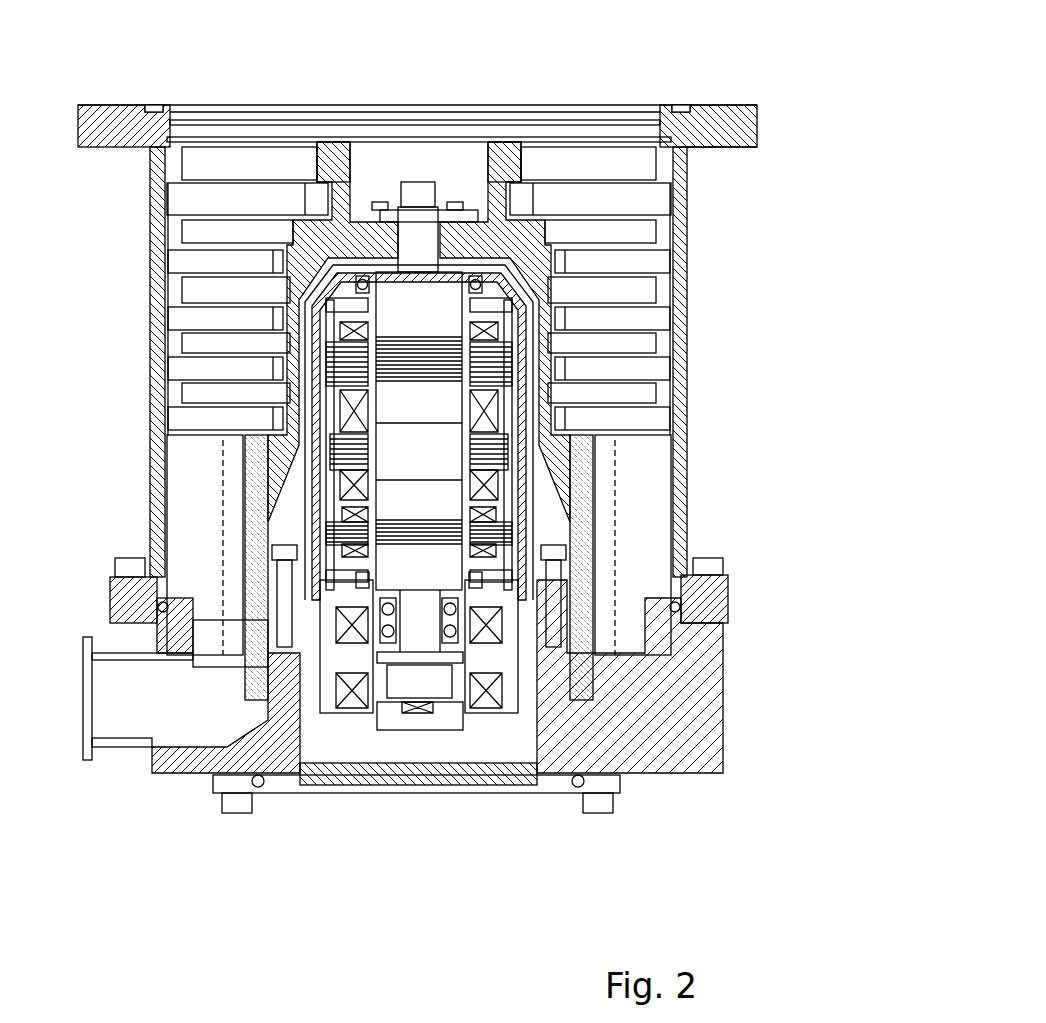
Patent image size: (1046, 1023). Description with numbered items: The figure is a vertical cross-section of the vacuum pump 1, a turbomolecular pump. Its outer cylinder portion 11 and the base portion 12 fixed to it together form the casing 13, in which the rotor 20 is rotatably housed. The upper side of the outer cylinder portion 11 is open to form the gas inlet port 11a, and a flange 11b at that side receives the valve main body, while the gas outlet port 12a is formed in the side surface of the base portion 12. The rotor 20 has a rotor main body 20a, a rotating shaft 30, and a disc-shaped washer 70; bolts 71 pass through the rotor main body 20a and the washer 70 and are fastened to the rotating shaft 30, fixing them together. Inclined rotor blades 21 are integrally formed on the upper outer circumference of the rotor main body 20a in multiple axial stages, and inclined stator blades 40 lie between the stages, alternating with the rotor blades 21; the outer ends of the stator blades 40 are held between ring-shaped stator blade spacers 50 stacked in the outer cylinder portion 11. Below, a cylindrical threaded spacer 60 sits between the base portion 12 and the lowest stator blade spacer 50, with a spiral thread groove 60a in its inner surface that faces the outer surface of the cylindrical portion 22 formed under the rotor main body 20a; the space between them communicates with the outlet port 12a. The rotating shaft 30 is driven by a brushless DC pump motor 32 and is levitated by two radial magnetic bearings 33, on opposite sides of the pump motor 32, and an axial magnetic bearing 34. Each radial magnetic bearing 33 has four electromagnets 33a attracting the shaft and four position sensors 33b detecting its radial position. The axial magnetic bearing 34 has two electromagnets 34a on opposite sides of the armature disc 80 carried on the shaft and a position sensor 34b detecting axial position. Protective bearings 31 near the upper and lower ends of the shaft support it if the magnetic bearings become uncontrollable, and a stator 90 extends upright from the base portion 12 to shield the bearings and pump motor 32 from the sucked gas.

The vacuum pump 1 is at (862, 112).
The outer cylinder portion 11 is at (747, 127).
The gas inlet port 11a is at (635, 128).
The flange 11b is at (735, 147).
The base portion 12 is at (700, 720).
The gas outlet port 12a is at (108, 698).
The casing 13 is at (737, 102).
The rotor 20 is at (407, 177).
The rotor main body 20a is at (498, 158).
The rotor blades 21 is at (213, 157).
The cylindrical portion 22 is at (247, 537).
The rotating shaft 30 is at (422, 227).
The protective bearings 31 is at (478, 278).
The pump motor 32 is at (500, 435).
The radial magnetic bearings 33 is at (498, 360).
The electromagnets 33a is at (497, 325).
The position sensors 33b is at (360, 287).
The axial magnetic bearing 34 is at (508, 713).
The electromagnets 34a is at (495, 688).
The position sensor 34b is at (413, 713).
The stator blades 40 is at (270, 193).
The stator blade spacers 50 is at (167, 293).
The threaded spacer 60 is at (177, 450).
The thread groove 60a is at (227, 482).
The washer 70 is at (290, 222).
The bolts 71 is at (382, 202).
The armature disc 80 is at (377, 657).
The stator 90 is at (303, 502).